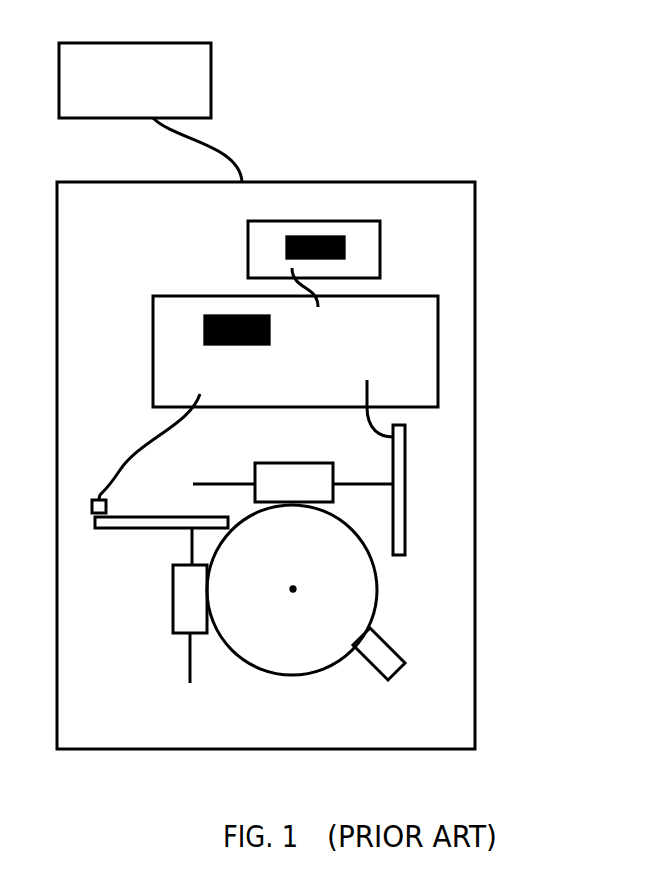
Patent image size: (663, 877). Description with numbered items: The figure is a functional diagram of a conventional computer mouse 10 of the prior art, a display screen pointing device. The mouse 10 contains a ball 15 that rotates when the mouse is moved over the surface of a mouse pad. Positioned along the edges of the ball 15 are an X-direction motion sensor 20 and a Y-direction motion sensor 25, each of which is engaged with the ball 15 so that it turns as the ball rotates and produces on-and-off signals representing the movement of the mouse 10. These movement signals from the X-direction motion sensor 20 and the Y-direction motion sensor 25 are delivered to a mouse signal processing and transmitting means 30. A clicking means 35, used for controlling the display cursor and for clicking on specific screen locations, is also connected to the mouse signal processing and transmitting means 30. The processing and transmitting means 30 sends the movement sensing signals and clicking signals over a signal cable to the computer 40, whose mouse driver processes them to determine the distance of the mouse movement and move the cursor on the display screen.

The computer mouse 10 is at (452, 115).
The ball 15 is at (297, 657).
The X-direction motion sensor 20 is at (417, 535).
The Y-direction motion sensor 25 is at (158, 617).
The mouse signal processing and transmitting means 30 is at (422, 347).
The clicking means 35 is at (337, 227).
The computer 40 is at (132, 43).